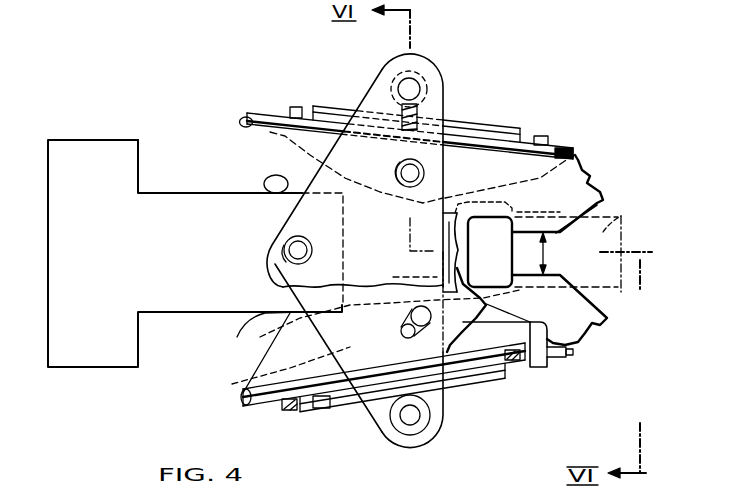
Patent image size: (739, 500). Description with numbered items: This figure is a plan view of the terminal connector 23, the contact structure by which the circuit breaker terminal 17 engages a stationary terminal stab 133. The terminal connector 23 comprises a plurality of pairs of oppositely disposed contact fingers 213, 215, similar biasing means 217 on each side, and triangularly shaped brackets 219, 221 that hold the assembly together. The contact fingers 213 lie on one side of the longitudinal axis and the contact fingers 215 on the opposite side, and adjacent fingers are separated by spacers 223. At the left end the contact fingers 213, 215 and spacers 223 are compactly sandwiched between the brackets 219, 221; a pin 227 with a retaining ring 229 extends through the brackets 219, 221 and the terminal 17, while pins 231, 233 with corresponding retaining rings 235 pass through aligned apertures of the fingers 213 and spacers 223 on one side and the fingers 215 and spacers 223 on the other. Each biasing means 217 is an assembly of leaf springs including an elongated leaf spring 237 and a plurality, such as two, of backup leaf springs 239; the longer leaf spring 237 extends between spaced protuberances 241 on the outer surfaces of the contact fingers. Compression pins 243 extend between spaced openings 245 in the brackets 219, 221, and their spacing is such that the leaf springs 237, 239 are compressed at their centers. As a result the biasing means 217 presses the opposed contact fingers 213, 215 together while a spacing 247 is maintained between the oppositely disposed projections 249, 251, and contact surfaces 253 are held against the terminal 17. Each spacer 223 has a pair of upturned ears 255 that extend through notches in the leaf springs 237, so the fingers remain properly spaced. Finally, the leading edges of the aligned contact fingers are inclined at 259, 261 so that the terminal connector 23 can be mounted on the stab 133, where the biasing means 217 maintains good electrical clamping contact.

The terminal 17 is at (173, 295).
The terminal connector 23 is at (506, 413).
The terminal stab 133 is at (622, 220).
The contact finger 213 is at (592, 174).
The contact finger 215 is at (597, 336).
The biasing means 217 is at (333, 93).
The bracket 219 is at (445, 106).
The bracket 221 is at (383, 428).
The spacer 223 is at (578, 160).
The pin 227 is at (285, 250).
The retaining ring 229 is at (290, 244).
The pin 231 is at (397, 170).
The pin 233 is at (262, 180).
The retaining ring 235 is at (425, 172).
The elongated leaf spring 237 is at (529, 147).
The backup leaf spring 239 is at (493, 133).
The protuberance 241 is at (241, 118).
The compression pin 243 is at (414, 88).
The opening 245 is at (428, 94).
The spacing 247 is at (546, 252).
The projection 249 is at (462, 240).
The projection 251 is at (462, 262).
The contact surface 253 is at (262, 326).
The ear 255 is at (295, 106).
The inclined leading edge 259 is at (613, 203).
The inclined leading edge 261 is at (601, 311).